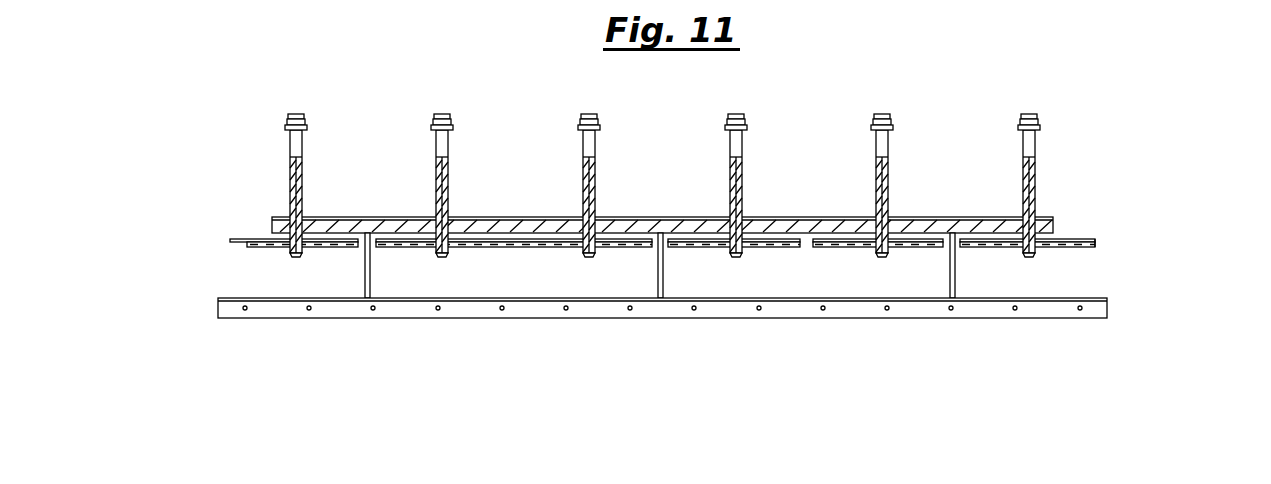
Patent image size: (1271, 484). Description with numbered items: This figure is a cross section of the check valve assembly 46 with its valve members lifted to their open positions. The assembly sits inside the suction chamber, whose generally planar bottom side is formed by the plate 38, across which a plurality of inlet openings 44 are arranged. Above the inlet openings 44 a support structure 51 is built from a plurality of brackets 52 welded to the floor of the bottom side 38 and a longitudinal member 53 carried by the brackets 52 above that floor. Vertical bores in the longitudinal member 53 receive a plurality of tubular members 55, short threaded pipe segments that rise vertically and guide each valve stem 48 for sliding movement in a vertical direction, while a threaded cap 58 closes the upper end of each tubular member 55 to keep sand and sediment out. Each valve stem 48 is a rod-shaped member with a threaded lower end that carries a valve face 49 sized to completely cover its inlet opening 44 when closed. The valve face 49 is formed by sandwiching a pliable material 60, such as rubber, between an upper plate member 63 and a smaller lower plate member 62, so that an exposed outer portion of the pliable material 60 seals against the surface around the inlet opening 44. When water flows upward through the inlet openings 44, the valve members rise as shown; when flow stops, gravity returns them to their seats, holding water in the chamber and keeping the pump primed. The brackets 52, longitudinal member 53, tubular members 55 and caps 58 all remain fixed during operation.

The check valve assembly 46 is at (253, 153).
The support structure 51 is at (272, 220).
The longitudinal member 53 is at (937, 218).
The threaded cap 58 is at (1032, 114).
The tubular member 55 is at (1038, 165).
The valve stem 48 is at (1036, 172).
The upper plate member 63 is at (1060, 242).
The lower plate member 62 is at (1060, 250).
The valve face 49 is at (1096, 241).
The pliable material 60 is at (1097, 245).
The bracket 52 is at (663, 283).
The plate 38 is at (1105, 299).
The inlet opening 44 is at (987, 300).